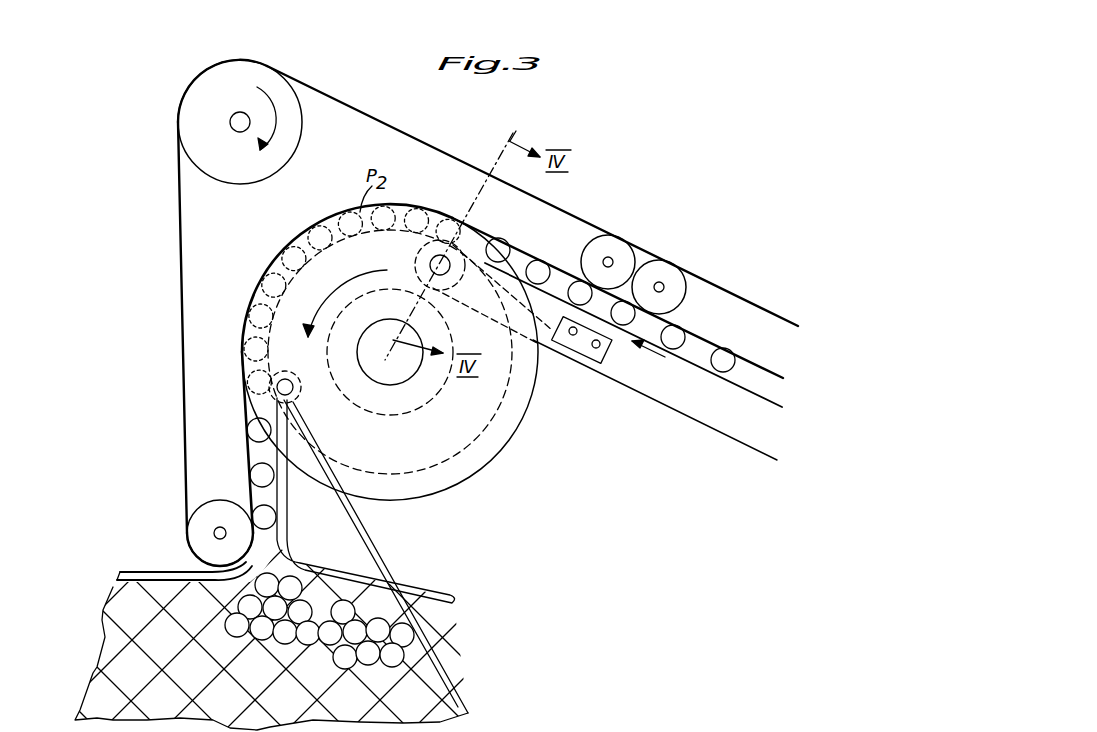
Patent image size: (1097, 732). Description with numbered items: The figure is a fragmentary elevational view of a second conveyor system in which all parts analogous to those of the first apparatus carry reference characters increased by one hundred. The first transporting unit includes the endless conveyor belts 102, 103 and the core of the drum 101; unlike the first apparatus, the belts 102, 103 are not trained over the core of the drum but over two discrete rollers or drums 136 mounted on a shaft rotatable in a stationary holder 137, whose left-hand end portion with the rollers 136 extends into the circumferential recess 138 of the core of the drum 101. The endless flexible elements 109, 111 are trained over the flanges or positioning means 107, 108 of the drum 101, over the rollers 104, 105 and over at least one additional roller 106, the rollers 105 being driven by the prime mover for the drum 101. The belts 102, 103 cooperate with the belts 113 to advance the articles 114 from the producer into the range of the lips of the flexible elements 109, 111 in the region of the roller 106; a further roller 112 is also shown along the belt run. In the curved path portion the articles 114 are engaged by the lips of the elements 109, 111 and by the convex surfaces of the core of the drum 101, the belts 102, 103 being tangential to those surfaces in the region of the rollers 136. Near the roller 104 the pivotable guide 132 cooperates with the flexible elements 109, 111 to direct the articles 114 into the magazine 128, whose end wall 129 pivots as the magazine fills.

The drum 101 is at (434, 367).
The endless conveyor belt 102 is at (488, 313).
The endless conveyor belt 103 is at (698, 422).
The roller 104 is at (193, 537).
The roller 105 is at (231, 60).
The additional roller 106 is at (660, 270).
The flange 107 is at (434, 353).
The flange 108 is at (505, 445).
The endless flexible element 109 is at (247, 450).
The endless flexible element 111 is at (246, 430).
The guide roller 112 is at (612, 256).
The belt 113 is at (690, 332).
The article 114 is at (724, 360).
The magazine 128 is at (128, 562).
The end wall 129 is at (362, 528).
The pivotable guide 132 is at (287, 547).
The roller 136 is at (443, 233).
The stationary holder 137 is at (553, 325).
The circumferential recess 138 is at (478, 476).